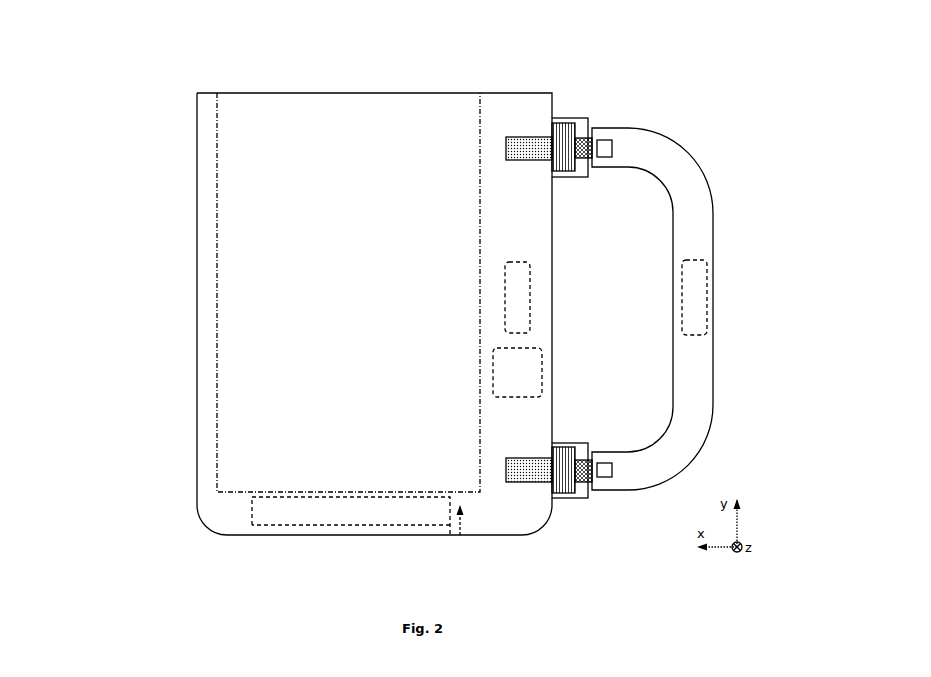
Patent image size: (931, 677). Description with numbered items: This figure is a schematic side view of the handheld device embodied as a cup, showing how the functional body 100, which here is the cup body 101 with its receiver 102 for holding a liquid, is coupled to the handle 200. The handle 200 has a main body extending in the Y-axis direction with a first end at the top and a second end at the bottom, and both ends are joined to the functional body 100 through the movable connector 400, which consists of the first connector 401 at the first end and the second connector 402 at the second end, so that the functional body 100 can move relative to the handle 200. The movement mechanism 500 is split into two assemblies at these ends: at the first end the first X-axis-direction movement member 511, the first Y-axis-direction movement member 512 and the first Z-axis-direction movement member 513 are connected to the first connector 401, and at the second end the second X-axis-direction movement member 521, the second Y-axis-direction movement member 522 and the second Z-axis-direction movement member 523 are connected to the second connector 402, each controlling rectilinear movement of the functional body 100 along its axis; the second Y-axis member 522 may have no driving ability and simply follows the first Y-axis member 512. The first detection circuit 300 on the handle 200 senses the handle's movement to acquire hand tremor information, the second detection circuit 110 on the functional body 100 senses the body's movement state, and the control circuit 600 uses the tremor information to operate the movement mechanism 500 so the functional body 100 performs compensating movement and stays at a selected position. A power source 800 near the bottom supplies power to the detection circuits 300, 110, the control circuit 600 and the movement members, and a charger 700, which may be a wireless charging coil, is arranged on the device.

The functional body 100 is at (319, 314).
The cup body 101 is at (197, 113).
The receiver 102 is at (217, 160).
The second detection circuit 110 is at (516, 298).
The handle 200 is at (713, 207).
The first detection circuit 300 is at (695, 298).
The movable connector 400 is at (662, 154).
The first connector 401 is at (606, 151).
The second connector 402 is at (607, 465).
The movement mechanism 500 is at (559, 96).
The first X-axis-direction movement member 511 is at (528, 140).
The first Y-axis-direction movement member 512 is at (582, 123).
The first Z-axis-direction movement member 513 is at (600, 131).
The second X-axis-direction movement member 521 is at (540, 450).
The second Y-axis-direction movement member 522 is at (578, 499).
The second Z-axis-direction movement member 523 is at (590, 481).
The control circuit 600 is at (516, 373).
The charger 700 is at (465, 536).
The power source 800 is at (252, 512).